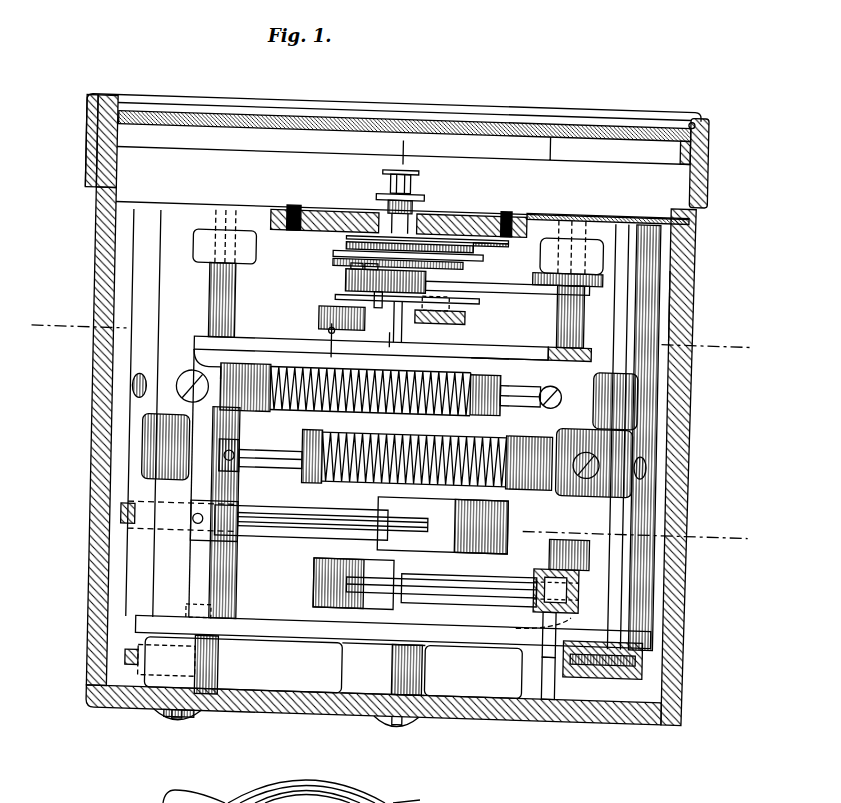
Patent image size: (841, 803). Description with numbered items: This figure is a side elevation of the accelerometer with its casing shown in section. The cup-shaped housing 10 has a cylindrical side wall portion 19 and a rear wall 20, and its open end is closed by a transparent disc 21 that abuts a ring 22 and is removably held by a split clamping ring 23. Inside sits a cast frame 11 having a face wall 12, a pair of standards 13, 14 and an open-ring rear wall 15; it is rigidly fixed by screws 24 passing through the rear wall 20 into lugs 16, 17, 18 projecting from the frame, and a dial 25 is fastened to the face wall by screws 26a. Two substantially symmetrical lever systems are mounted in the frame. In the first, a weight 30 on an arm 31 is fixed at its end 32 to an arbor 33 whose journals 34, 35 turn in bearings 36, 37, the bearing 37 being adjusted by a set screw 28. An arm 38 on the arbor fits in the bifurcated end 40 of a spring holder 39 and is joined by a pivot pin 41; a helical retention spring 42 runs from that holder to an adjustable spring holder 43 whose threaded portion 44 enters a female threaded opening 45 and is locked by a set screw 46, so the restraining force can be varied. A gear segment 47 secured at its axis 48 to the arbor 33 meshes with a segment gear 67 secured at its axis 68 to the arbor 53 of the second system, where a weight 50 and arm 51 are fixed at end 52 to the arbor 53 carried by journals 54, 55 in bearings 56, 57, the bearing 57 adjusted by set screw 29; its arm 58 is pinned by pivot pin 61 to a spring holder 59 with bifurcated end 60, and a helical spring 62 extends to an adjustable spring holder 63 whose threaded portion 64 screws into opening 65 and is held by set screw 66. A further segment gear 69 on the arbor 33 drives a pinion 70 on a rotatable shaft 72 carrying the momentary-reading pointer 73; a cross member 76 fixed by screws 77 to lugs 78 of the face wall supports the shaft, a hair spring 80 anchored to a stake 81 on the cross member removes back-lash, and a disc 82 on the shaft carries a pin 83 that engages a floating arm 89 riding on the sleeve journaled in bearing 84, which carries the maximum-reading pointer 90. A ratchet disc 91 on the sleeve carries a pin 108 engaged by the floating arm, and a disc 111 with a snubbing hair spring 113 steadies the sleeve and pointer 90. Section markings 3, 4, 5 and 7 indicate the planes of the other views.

The housing 10 is at (677, 253).
The frame 11 is at (670, 281).
The face wall 12 is at (462, 210).
The standard 13 is at (645, 240).
The standard 14 is at (130, 248).
The rear wall 15 is at (448, 638).
The lug 16 is at (547, 674).
The lug 17 is at (360, 668).
The lug 18 is at (224, 672).
The cylindrical side wall portion 19 is at (690, 412).
The rear wall 20 is at (460, 700).
The transparent disc 21 is at (500, 108).
The ring 22 is at (672, 135).
The split clamping ring 23 is at (648, 93).
The screw 24 is at (180, 715).
The dial 25 is at (243, 197).
The screws 26a is at (296, 199).
The set screw 28 is at (612, 655).
The set screw 29 is at (138, 660).
The weight 30 is at (310, 580).
The arm 31 is at (428, 580).
The opposite end 32 is at (580, 576).
The arbor 33 is at (540, 540).
The journal 34 is at (590, 250).
The journal 35 is at (575, 615).
The bearing 36 is at (545, 258).
The bearing 37 is at (547, 608).
The arm 38 is at (560, 378).
The spring holder 39 is at (480, 378).
The bifurcated end 40 is at (522, 375).
The pivot pin 41 is at (550, 395).
The helical retention spring 42 is at (360, 365).
The spring holder 43 is at (262, 376).
The threaded portion 44 is at (193, 352).
The female threaded opening 45 is at (132, 385).
The set screw 46 is at (180, 392).
The gear segment 47 is at (440, 332).
The axis 48 is at (555, 336).
The weight 50 is at (432, 528).
The arm 51 is at (355, 518).
The opposite end 52 is at (198, 520).
The arbor 53 is at (218, 560).
The journal 54 is at (212, 240).
The journal 55 is at (205, 600).
The bearing 56 is at (207, 266).
The bearing 57 is at (225, 600).
The arm 58 is at (222, 452).
The spring holder 59 is at (308, 432).
The bifurcated end 60 is at (270, 462).
The pivot pin 61 is at (262, 427).
The helical retention spring 62 is at (390, 436).
The spring holder 63 is at (492, 438).
The threaded portion 64 is at (580, 420).
The female threaded opening 65 is at (648, 450).
The set screw 66 is at (588, 460).
The segment gear 67 is at (320, 332).
The axis 68 is at (232, 332).
The segment gear 69 is at (488, 278).
The pinion 70 is at (343, 270).
The rotatable shaft 72 is at (396, 160).
The pointer 73 is at (390, 172).
The cross member 76 is at (485, 336).
The screws 77 is at (330, 340).
The lugs 78 is at (372, 288).
The hair spring 80 is at (333, 288).
The stake 81 is at (463, 302).
The disc 82 is at (450, 253).
The pin 83 is at (362, 256).
The bearing 84 is at (410, 200).
The floating arm 89 is at (348, 256).
The pointer 90 is at (384, 186).
The disc 91 is at (465, 243).
The pin 108 is at (343, 236).
The disc 111 is at (470, 229).
The hair spring 113 is at (343, 228).
The section line 3- 3 is at (49, 314).
The section line 4- 4 is at (544, 505).
The view arrow 5 is at (66, 341).
The section line 7- 7 is at (408, 144).